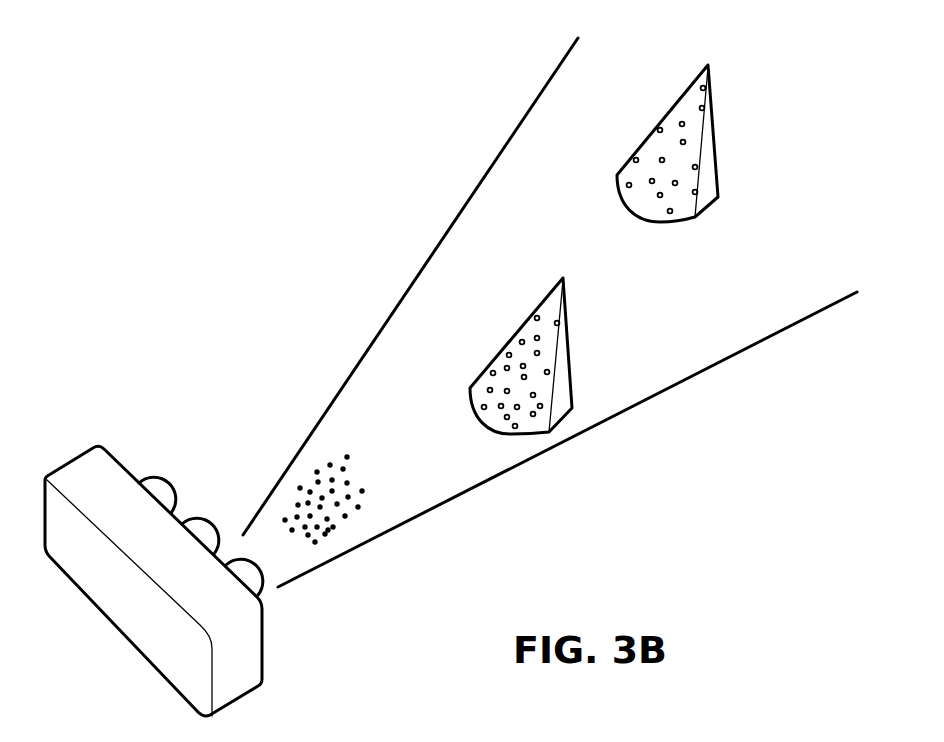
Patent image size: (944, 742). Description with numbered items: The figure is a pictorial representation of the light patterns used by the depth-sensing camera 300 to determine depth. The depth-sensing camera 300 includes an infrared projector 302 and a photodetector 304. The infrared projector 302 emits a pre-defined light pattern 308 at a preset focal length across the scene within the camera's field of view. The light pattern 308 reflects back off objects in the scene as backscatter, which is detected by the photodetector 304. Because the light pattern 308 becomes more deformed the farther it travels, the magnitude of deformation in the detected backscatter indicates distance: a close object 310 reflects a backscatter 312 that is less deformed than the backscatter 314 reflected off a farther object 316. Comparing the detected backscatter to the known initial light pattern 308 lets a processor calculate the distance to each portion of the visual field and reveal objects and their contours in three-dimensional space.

The depth-sensing camera 300 is at (110, 627).
The infrared projector 302 is at (258, 592).
The photodetector 304 is at (170, 478).
The light pattern 308 is at (370, 522).
The close object 310 is at (572, 413).
The backscatter 312 is at (525, 430).
The backscatter 314 is at (688, 217).
The farther object 316 is at (712, 205).